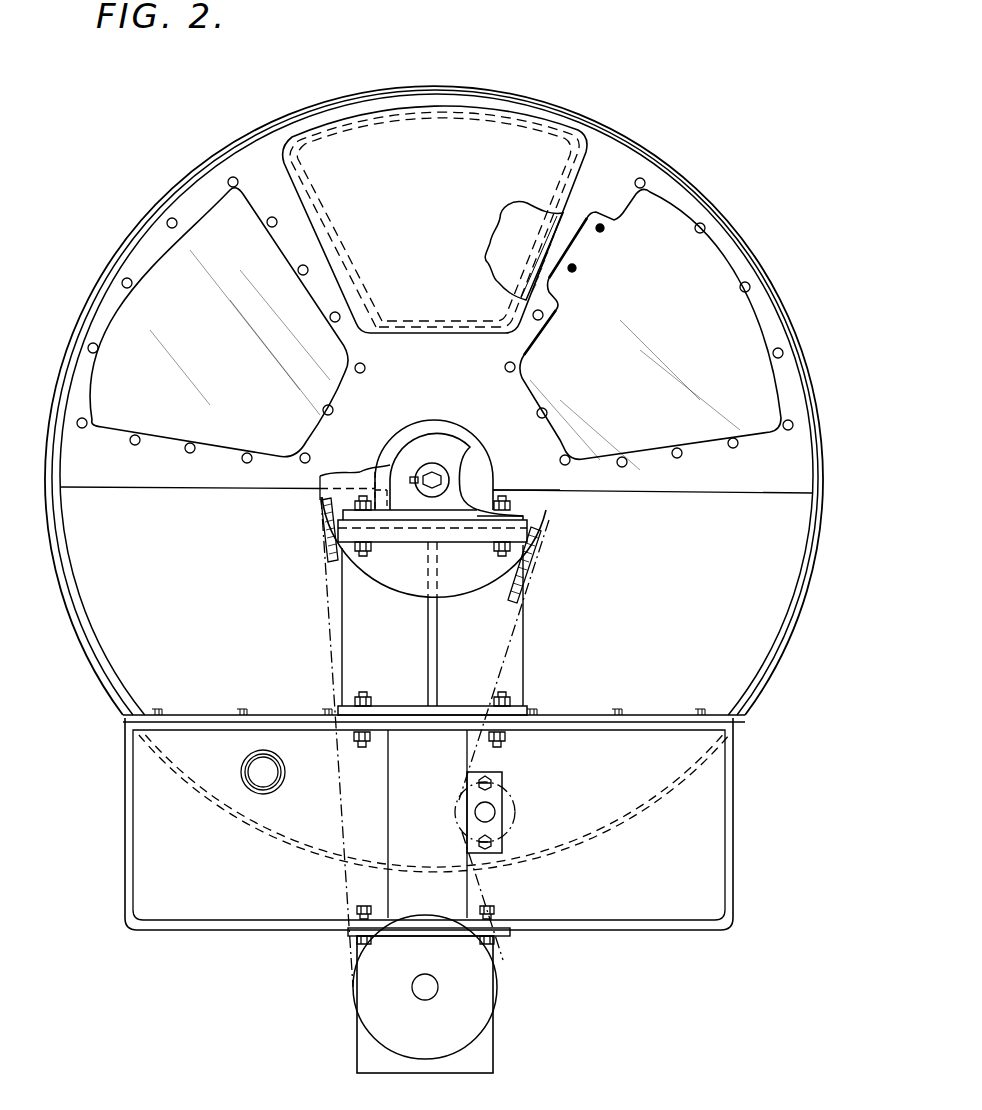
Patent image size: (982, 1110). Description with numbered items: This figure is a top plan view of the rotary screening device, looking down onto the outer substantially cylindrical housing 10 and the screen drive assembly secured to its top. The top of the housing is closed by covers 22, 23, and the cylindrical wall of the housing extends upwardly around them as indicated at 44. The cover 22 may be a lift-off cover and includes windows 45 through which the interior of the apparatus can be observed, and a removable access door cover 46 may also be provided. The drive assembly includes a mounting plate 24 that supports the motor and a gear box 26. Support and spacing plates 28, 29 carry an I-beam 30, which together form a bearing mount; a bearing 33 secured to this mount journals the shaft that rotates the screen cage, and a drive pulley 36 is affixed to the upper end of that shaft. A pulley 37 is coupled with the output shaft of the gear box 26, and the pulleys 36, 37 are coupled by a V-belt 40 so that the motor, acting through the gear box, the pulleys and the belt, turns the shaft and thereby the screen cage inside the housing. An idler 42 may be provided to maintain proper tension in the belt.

The housing 10 is at (706, 184).
The cover 22 is at (611, 177).
The cover 23 is at (748, 627).
The mounting plate 24 is at (593, 927).
The gear box 26 is at (472, 1060).
The support and spacing plate 28 is at (402, 790).
The support and spacing plate 29 is at (556, 725).
The I-beam 30 is at (447, 658).
The bearing 33 is at (467, 473).
The drive pulley 36 is at (456, 566).
The pulley 37 is at (500, 993).
The V-belt 40 is at (523, 584).
The idler 42 is at (513, 813).
The upward extension of wall 44 is at (145, 219).
The windows 45 is at (222, 243).
The access door cover 46 is at (504, 163).